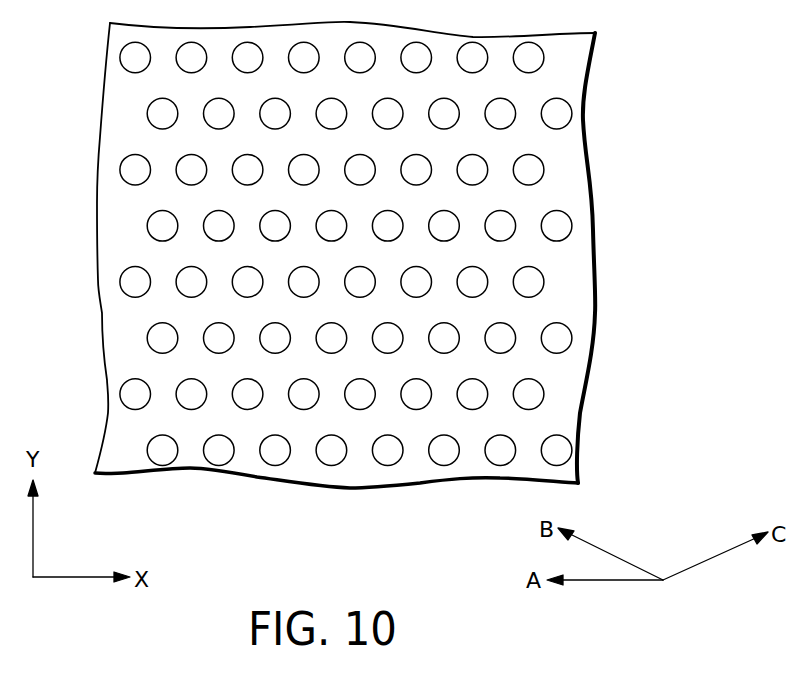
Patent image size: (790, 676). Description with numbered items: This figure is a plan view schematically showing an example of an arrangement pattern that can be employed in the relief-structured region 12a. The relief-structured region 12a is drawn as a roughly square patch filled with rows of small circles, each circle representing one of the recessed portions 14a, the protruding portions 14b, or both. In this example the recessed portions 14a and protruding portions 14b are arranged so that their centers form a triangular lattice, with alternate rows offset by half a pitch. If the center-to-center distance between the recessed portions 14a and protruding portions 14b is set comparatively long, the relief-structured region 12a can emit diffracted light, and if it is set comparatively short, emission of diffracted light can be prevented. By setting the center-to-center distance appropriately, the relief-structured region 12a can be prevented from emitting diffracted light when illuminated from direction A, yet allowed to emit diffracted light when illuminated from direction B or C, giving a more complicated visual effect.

The relief-structured region 12a is at (612, 88).
The recessed portions 14a is at (414, 399).
The protruding portions 14b is at (359, 281).